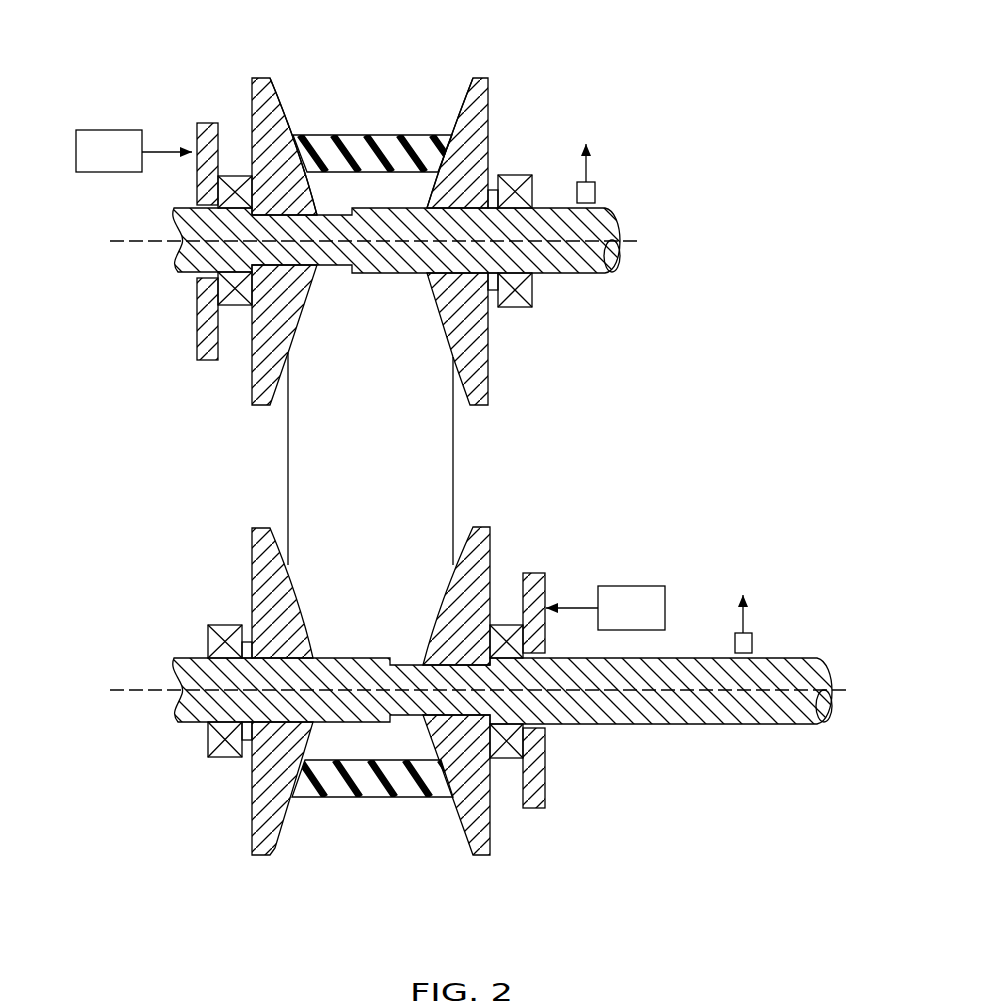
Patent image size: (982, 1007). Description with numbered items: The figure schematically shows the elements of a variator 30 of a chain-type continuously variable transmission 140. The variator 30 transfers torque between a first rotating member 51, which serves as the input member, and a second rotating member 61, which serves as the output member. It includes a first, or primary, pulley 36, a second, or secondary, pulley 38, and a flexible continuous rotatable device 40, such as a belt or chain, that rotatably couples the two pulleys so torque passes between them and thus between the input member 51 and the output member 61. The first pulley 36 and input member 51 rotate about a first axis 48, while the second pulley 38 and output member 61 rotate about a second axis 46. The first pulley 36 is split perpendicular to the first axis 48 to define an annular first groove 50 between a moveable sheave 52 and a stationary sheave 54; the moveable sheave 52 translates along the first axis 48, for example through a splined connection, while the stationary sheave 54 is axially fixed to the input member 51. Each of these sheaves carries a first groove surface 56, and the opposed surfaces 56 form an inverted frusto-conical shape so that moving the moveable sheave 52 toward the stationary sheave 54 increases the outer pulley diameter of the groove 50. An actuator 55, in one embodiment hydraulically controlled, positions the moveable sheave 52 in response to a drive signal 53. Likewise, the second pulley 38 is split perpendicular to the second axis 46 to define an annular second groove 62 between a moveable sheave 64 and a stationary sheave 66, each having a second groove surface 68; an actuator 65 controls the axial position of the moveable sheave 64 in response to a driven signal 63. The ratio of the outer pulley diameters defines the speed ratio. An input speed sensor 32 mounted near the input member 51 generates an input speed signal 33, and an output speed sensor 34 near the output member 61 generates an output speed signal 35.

The continuously variable transmission 140 is at (160, 868).
The variator 30 is at (240, 808).
The CVT variator input speed sensor 32 is at (596, 193).
The input speed signal 33 is at (568, 176).
The CVT variator output speed sensor 34 is at (753, 643).
The output speed signal 35 is at (729, 624).
The first pulley 36 is at (494, 137).
The second pulley 38 is at (494, 826).
The flexible continuous rotatable device 40 is at (456, 447).
The second axis 46 is at (140, 697).
The first axis 48 is at (140, 246).
The annular first groove 50 is at (414, 130).
The first rotating member 51 is at (572, 275).
The moveable first sheave 52 is at (256, 109).
The drive signal 53 is at (107, 126).
The stationary first sheave 54 is at (482, 110).
The actuator 55 is at (120, 163).
The first groove surface 56 is at (311, 144).
The second rotating member 61 is at (601, 726).
The annular second groove 62 is at (362, 815).
The driven signal 63 is at (632, 583).
The moveable second sheave 64 is at (491, 547).
The actuator 65 is at (642, 621).
The stationary second sheave 66 is at (254, 547).
The second groove surface 68 is at (273, 551).